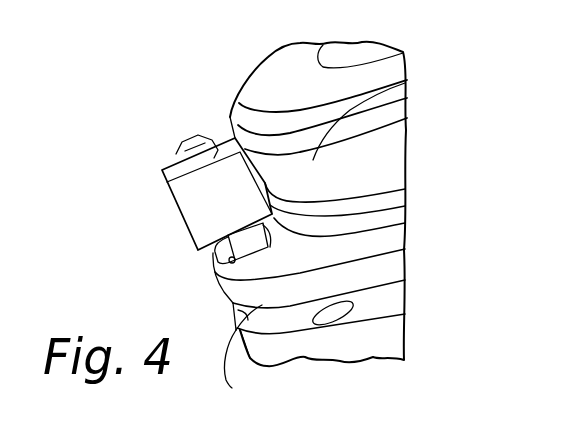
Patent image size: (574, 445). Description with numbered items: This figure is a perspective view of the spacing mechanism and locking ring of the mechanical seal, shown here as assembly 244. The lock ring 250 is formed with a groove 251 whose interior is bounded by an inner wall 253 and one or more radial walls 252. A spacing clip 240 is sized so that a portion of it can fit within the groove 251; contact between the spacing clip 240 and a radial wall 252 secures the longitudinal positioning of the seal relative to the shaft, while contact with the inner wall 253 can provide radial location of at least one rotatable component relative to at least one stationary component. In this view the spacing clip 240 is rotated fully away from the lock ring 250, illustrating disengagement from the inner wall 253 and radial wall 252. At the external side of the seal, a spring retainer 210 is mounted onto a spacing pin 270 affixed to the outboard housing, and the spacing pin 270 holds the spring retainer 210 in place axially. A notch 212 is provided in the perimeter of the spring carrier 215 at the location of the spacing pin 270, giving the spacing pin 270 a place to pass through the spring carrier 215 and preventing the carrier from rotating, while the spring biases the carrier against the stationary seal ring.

The spinal fixation assembly 244 is at (170, 114).
The lock ring 250 is at (297, 72).
The inner wall 253 is at (400, 91).
The groove 251 is at (373, 149).
The radial wall 252 is at (332, 203).
The second spring 215 is at (367, 333).
The spring retainer 210 is at (237, 293).
The notch 212 is at (252, 370).
The spacing clip 240 is at (205, 203).
The spacing pin 270 is at (176, 148).